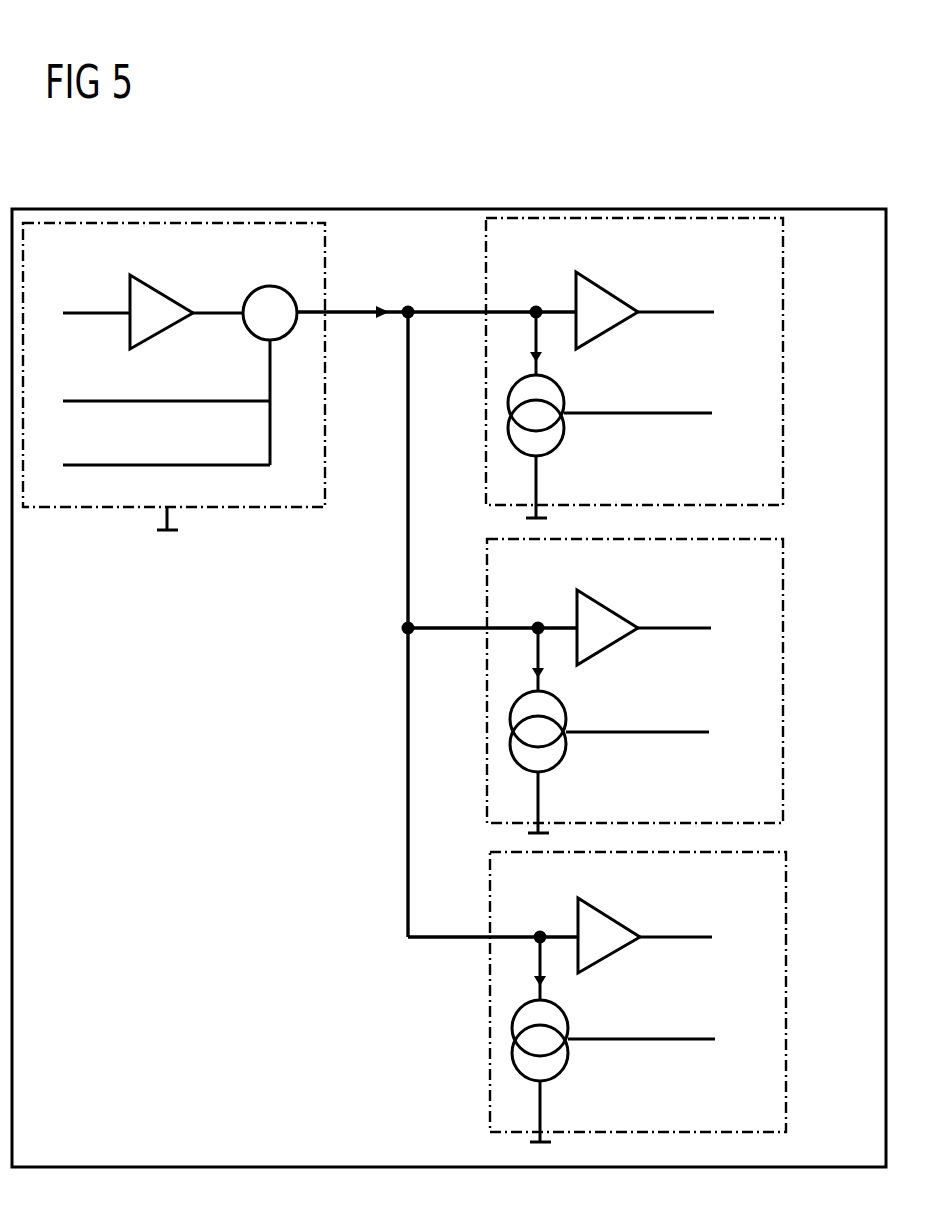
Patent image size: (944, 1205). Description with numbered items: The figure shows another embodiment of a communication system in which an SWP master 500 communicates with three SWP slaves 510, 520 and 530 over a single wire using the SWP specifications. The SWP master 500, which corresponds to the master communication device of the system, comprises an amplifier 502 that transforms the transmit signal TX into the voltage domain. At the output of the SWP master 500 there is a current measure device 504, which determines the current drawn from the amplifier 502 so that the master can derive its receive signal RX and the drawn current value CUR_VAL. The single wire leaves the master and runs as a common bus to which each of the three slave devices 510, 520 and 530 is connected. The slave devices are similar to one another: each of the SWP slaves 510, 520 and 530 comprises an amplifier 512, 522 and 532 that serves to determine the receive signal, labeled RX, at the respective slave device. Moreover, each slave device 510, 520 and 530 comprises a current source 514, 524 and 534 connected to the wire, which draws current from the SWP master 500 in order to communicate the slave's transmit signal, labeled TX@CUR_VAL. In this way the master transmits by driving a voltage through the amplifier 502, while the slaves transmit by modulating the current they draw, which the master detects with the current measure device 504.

The SWP master 500 is at (247, 508).
The amplifier 502 is at (167, 295).
The current measure device 504 is at (292, 299).
The SWP slave 510 is at (773, 506).
The amplifier 512 is at (622, 320).
The current source 514 is at (561, 437).
The SWP slave 520 is at (773, 824).
The amplifier 522 is at (622, 636).
The current source 524 is at (563, 755).
The SWP slave 530 is at (490, 1025).
The amplifier 532 is at (624, 945).
The current source 534 is at (565, 1065).